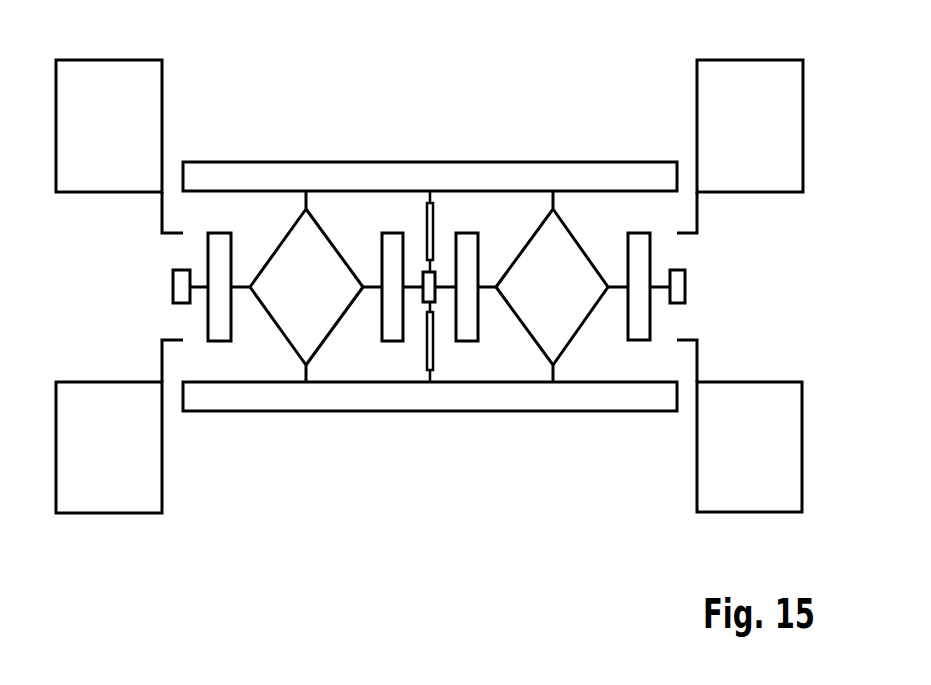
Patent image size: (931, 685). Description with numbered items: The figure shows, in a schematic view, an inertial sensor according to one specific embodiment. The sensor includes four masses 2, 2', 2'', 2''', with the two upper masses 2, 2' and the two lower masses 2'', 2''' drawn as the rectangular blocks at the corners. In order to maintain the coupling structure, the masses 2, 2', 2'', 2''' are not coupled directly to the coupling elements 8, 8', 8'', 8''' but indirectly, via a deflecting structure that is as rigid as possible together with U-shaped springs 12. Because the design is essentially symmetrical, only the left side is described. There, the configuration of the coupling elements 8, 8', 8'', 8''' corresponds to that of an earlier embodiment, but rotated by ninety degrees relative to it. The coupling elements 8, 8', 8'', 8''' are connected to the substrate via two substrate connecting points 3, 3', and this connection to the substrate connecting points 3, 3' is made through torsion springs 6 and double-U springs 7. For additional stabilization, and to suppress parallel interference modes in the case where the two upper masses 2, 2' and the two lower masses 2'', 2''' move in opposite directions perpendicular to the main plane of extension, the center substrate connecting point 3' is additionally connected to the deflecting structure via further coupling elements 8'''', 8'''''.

The mass 2 is at (109, 101).
The mass 2' is at (750, 101).
The mass 2'' is at (109, 474).
The mass 2''' is at (749, 475).
The U-shaped spring 12 is at (162, 212).
The substrate connecting point 3 is at (152, 286).
The substrate connecting point 3' is at (456, 206).
The torsion spring 6 is at (240, 285).
The double-U spring 7 is at (215, 333).
The coupling element 8 is at (278, 371).
The coupling element 8' is at (334, 371).
The coupling element 8'' is at (337, 198).
The coupling element 8''' is at (278, 198).
The further coupling element 8'''' is at (408, 191).
The further coupling element 8''''' is at (464, 378).